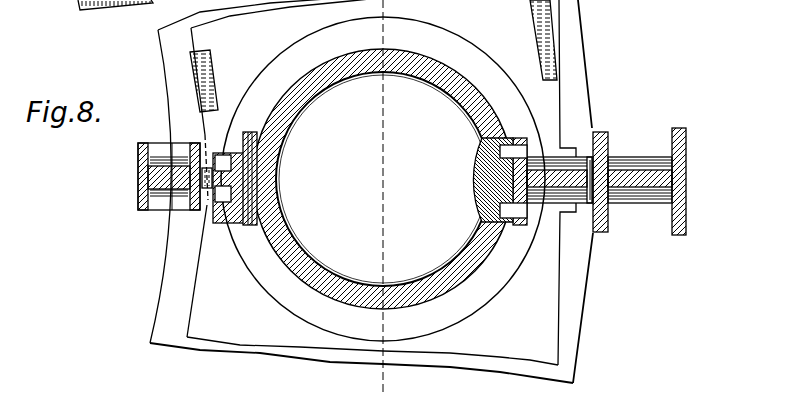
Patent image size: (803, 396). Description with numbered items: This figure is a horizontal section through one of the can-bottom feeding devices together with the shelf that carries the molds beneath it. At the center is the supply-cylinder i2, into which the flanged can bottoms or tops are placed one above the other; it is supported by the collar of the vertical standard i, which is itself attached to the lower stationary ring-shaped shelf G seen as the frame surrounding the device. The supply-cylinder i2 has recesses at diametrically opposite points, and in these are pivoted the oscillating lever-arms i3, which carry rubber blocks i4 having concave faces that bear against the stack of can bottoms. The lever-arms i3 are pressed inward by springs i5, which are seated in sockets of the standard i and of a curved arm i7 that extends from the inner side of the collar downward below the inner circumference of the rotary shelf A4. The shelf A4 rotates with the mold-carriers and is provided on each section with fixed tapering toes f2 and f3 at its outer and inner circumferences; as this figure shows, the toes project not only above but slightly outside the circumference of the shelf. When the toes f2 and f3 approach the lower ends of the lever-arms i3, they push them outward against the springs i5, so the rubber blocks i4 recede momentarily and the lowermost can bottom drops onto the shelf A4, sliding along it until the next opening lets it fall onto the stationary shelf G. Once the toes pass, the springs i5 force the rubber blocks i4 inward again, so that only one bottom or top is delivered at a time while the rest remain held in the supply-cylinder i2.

The stationary ring-shaped shelf G is at (372, 191).
The ring-shaped shelf A4 is at (382, 174).
The supply-cylinder i2 is at (383, 184).
The tapering projection or toe f3 is at (216, 80).
The tapering projection or toe f2 is at (537, 37).
The curved arm i7 is at (155, 176).
The springs i5 is at (208, 193).
The oscillating lever-arms i3 is at (245, 187).
The rubber blocks i4 is at (495, 180).
The vertical standard i is at (639, 181).